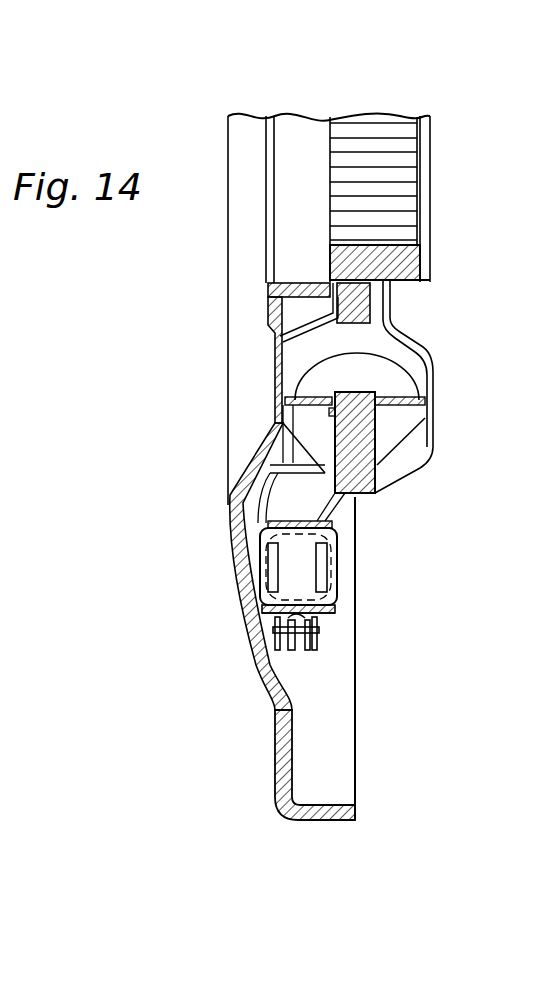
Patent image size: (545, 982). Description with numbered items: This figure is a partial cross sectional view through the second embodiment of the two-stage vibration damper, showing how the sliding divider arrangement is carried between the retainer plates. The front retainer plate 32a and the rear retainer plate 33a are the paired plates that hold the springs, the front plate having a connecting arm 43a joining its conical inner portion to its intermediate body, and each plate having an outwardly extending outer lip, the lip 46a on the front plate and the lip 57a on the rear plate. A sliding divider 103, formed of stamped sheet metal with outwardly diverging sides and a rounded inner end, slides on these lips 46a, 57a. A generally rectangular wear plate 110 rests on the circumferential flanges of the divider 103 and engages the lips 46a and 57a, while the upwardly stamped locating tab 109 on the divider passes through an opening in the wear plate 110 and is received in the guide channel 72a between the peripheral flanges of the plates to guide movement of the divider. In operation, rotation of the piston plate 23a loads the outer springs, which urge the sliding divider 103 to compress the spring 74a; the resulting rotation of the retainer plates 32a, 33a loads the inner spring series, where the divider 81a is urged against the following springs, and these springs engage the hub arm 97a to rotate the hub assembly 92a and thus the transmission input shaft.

The hub assembly 92a is at (436, 255).
The hub arm 97a is at (388, 296).
The divider 81a is at (416, 421).
The front retainer plate 32a is at (230, 505).
The rear retainer plate 33a is at (357, 513).
The spring 74a is at (258, 563).
The connecting arm 43a is at (238, 584).
The outer lip 46a is at (245, 612).
The wear plate 110 is at (327, 592).
The outer lip 57a is at (336, 612).
The locating tab 109 is at (275, 627).
The sliding divider 103 is at (323, 620).
The guide channel 72a is at (298, 655).
The piston plate 23a is at (275, 722).